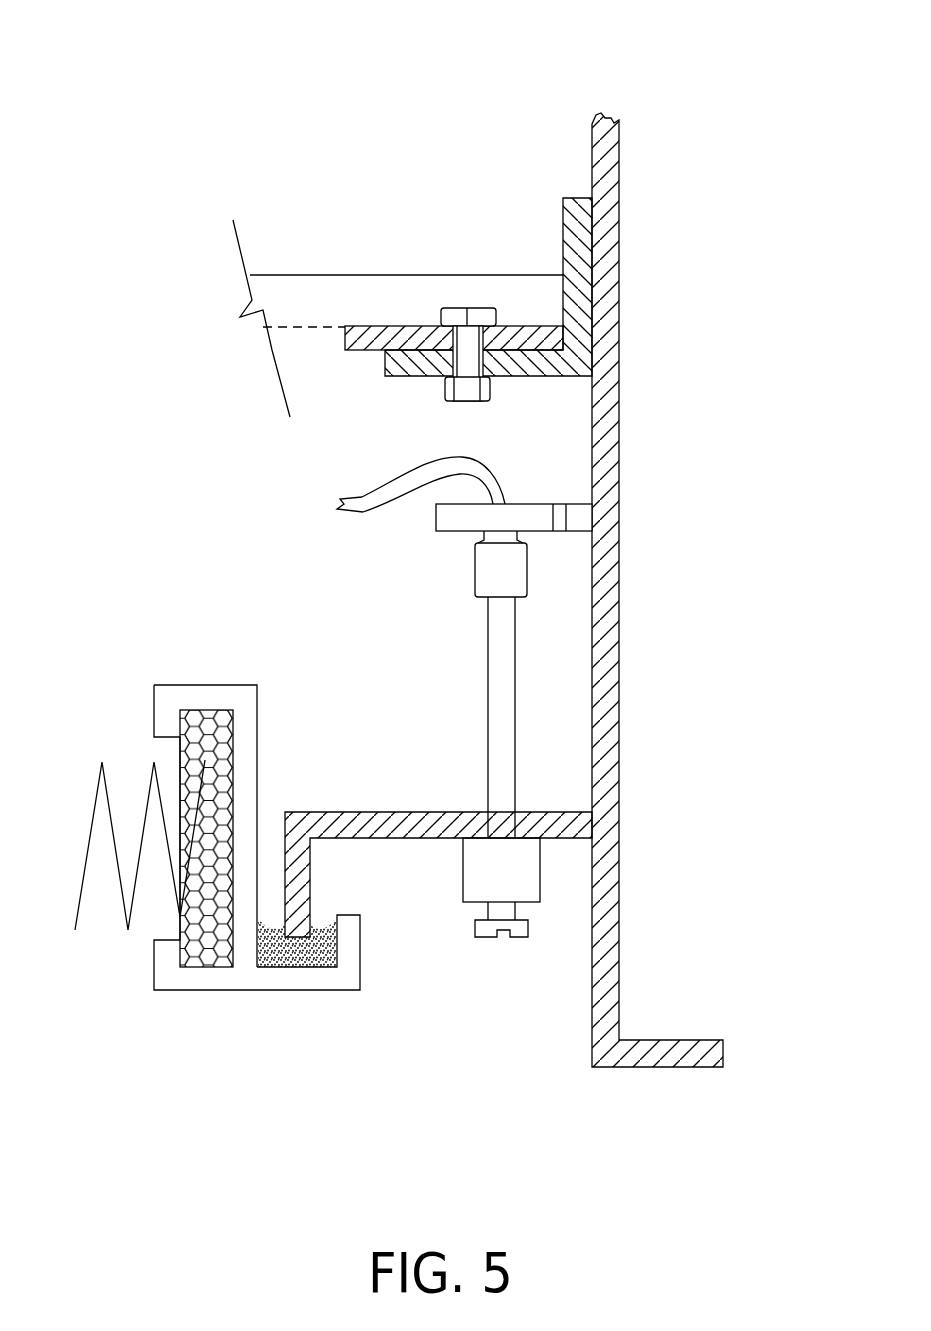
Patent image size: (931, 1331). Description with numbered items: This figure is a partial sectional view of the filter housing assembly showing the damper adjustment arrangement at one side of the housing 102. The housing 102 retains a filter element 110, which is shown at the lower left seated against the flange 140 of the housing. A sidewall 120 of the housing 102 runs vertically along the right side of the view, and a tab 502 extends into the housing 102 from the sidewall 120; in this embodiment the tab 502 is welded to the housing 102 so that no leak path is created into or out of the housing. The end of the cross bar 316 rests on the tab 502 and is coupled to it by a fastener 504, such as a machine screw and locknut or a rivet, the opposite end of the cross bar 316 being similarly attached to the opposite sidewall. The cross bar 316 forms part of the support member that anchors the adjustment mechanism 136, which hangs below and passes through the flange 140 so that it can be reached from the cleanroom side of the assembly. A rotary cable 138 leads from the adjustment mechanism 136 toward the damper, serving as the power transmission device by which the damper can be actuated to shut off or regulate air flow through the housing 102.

The housing 102 is at (643, 142).
The sidewall 120 is at (607, 233).
The cross bar 316 is at (297, 288).
The tab 502 is at (573, 222).
The fastener 504 is at (468, 327).
The rotary cable 138 is at (363, 506).
The adjustment mechanism 136 is at (460, 915).
The flange 140 is at (328, 812).
The filter element 110 is at (185, 685).